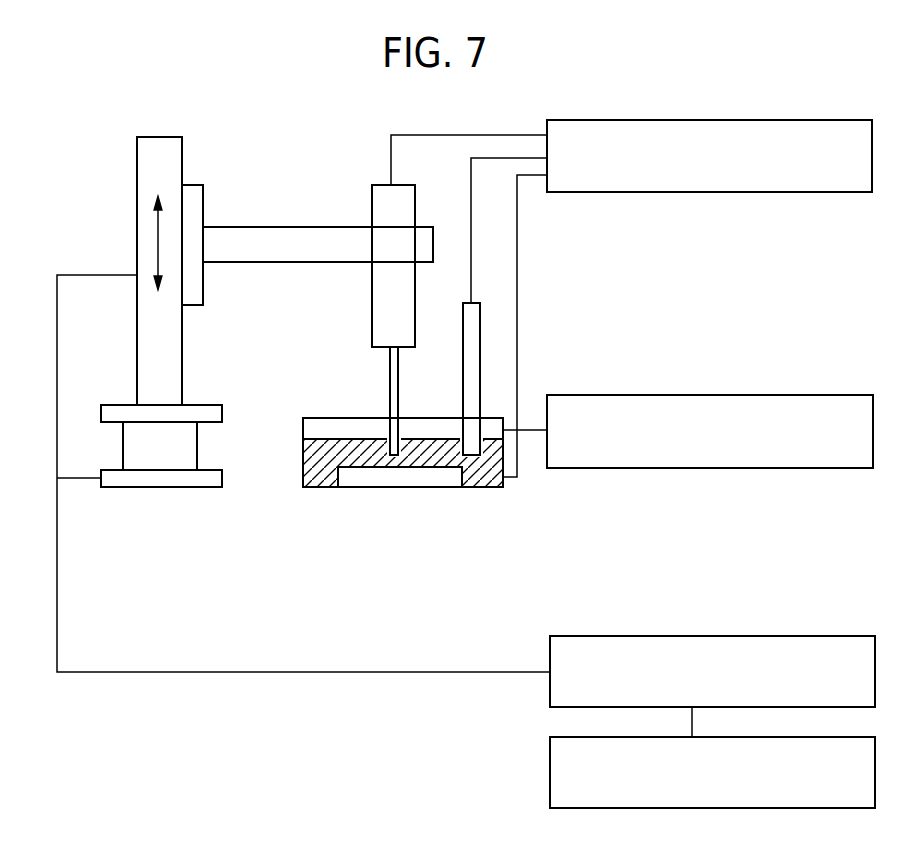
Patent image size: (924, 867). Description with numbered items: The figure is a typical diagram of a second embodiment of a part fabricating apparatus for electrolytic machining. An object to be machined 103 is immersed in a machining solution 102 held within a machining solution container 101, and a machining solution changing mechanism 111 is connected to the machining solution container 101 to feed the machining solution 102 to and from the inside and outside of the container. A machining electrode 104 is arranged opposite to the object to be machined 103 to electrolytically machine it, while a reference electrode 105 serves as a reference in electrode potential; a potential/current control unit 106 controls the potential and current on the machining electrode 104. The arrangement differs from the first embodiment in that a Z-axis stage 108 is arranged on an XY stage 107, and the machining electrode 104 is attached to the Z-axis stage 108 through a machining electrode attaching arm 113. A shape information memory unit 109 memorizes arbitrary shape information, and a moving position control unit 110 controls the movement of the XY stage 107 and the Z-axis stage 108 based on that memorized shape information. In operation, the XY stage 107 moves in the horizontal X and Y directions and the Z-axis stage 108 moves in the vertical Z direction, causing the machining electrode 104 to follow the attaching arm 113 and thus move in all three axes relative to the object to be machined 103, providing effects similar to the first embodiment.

The machining solution container 101 is at (488, 425).
The machining solution 102 is at (320, 478).
The object to be machined 103 is at (417, 479).
The machining electrode 104 is at (390, 392).
The reference electrode 105 is at (473, 321).
The potential/current control unit 106 is at (770, 120).
The XY-axis stage 107 is at (152, 462).
The Z-axis stage 108 is at (162, 137).
The shape information memory unit 109 is at (550, 771).
The moving position control unit 110 is at (774, 636).
The machining solution changing mechanism 111 is at (770, 395).
The machining electrode attaching arm 113 is at (275, 238).